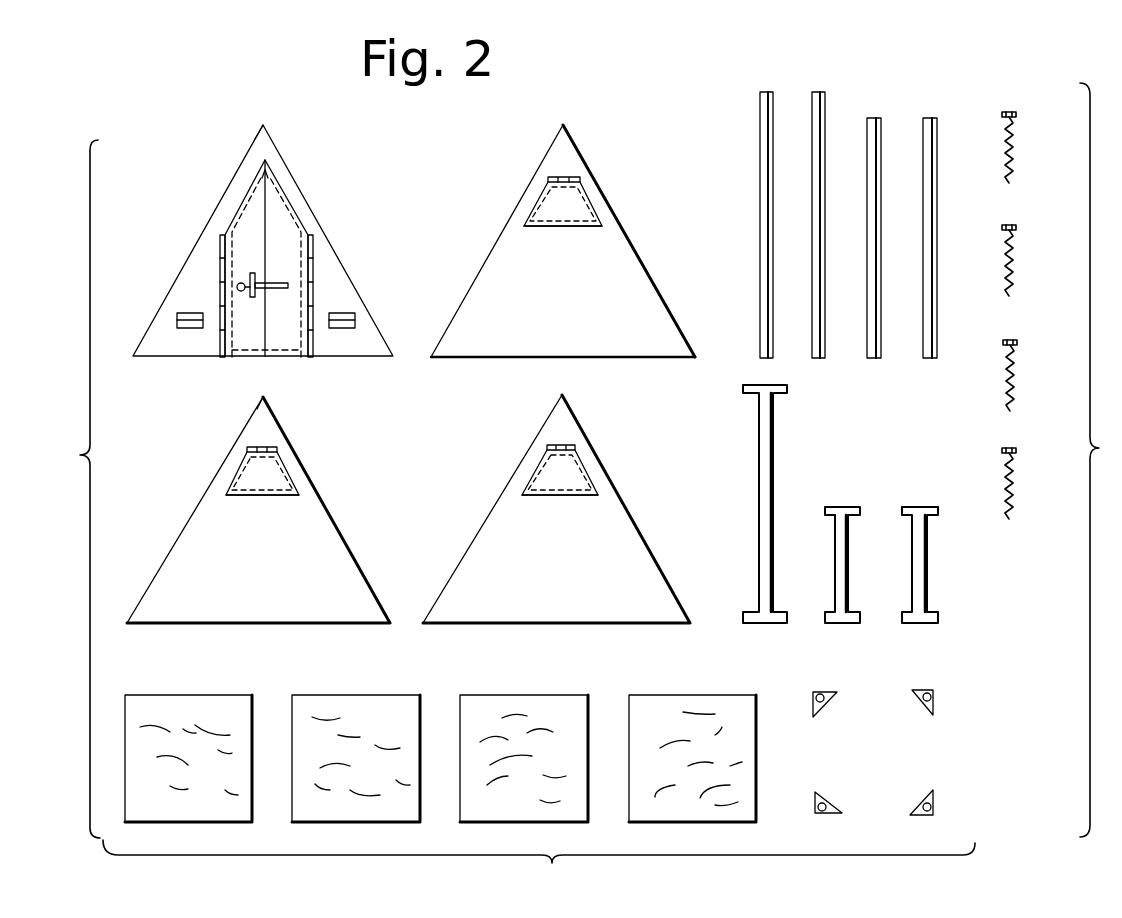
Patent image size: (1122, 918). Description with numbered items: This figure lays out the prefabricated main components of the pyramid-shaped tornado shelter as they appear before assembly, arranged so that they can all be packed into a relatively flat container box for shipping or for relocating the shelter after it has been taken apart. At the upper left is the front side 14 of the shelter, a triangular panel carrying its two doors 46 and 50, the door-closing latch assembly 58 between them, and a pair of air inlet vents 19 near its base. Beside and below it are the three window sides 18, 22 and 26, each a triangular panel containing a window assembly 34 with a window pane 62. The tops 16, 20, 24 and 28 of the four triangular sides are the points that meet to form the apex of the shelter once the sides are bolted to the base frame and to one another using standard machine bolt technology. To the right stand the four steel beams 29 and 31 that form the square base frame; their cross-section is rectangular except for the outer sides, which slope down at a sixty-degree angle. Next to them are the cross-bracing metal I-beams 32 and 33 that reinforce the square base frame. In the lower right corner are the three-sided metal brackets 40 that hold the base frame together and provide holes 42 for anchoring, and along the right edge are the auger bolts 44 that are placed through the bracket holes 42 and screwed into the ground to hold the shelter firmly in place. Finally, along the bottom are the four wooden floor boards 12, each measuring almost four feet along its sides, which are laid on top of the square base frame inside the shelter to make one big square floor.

The wooden floor boards 12 is at (163, 700).
The front side 14 is at (325, 268).
The top of triangular side 16 is at (268, 129).
The window side 18 is at (620, 277).
The air inlet vents 19 is at (190, 308).
The top of triangular side 20 is at (565, 128).
The window side 22 is at (300, 520).
The top of triangular side 24 is at (262, 400).
The window side 26 is at (597, 542).
The top of triangular side 28 is at (563, 400).
The steel beams 29 is at (760, 95).
The steel beams 31 is at (930, 118).
The cross-bracing metal I-beam 32 is at (773, 420).
The cross-bracing metal I-beams 33 is at (838, 507).
The window assembly 34 is at (556, 230).
The three-sided metal brackets 40 is at (820, 710).
The bracket holes 42 is at (820, 694).
The auger bolts 44 is at (1010, 160).
The door 46 is at (250, 212).
The door 50 is at (278, 210).
The door-closing latch assembly 58 is at (283, 313).
The window pane 62 is at (555, 205).